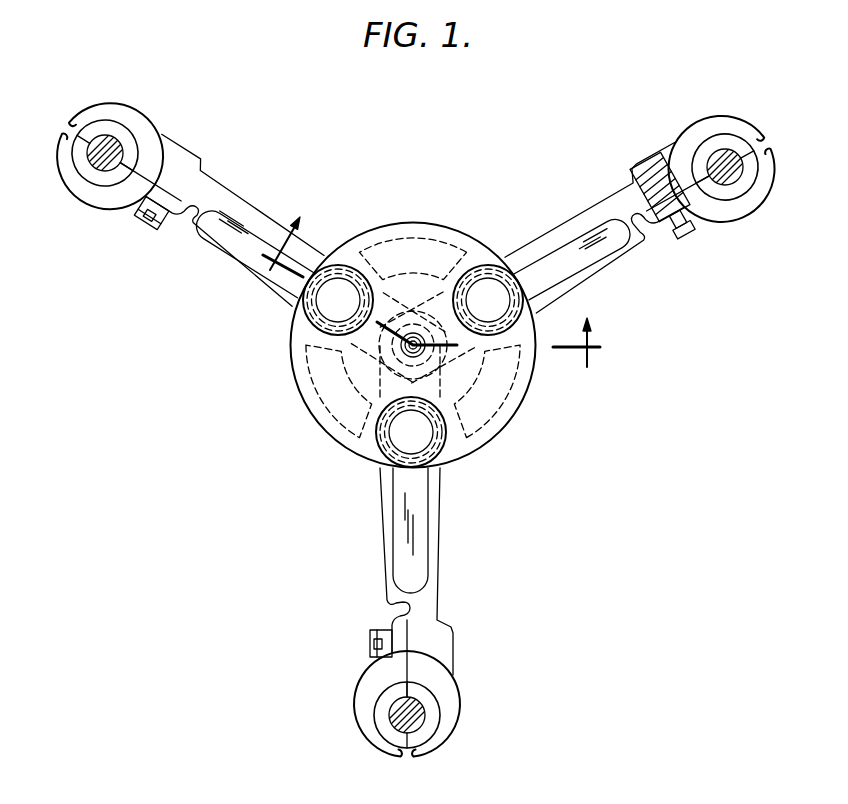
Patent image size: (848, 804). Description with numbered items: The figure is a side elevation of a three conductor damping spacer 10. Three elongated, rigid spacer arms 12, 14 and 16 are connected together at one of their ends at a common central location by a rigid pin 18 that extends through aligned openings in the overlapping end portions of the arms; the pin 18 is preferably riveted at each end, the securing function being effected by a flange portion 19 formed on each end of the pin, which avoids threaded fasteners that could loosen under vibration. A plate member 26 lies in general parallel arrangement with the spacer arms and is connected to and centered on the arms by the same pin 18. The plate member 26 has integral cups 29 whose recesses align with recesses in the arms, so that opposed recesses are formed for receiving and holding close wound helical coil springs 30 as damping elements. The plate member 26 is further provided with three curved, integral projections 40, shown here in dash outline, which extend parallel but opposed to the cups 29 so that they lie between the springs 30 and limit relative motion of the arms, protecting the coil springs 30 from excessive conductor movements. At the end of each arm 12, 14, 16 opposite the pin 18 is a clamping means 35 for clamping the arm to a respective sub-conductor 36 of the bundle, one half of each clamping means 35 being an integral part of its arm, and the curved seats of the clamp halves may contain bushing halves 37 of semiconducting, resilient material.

The damping spacer 10 is at (506, 198).
The spacer arm 12 is at (238, 199).
The spacer arm 14 is at (440, 565).
The spacer arm 16 is at (597, 208).
The rigid pin 18 is at (345, 420).
The flange portion 19 is at (414, 342).
The plate member 26 is at (522, 442).
The integral cups 29 is at (345, 266).
The close wound helical coil springs 30 is at (302, 312).
The clamping means 35 is at (70, 136).
The sub-conductor 36 is at (104, 138).
The bushing halves 37 is at (121, 127).
The curved integral projections 40 is at (418, 238).